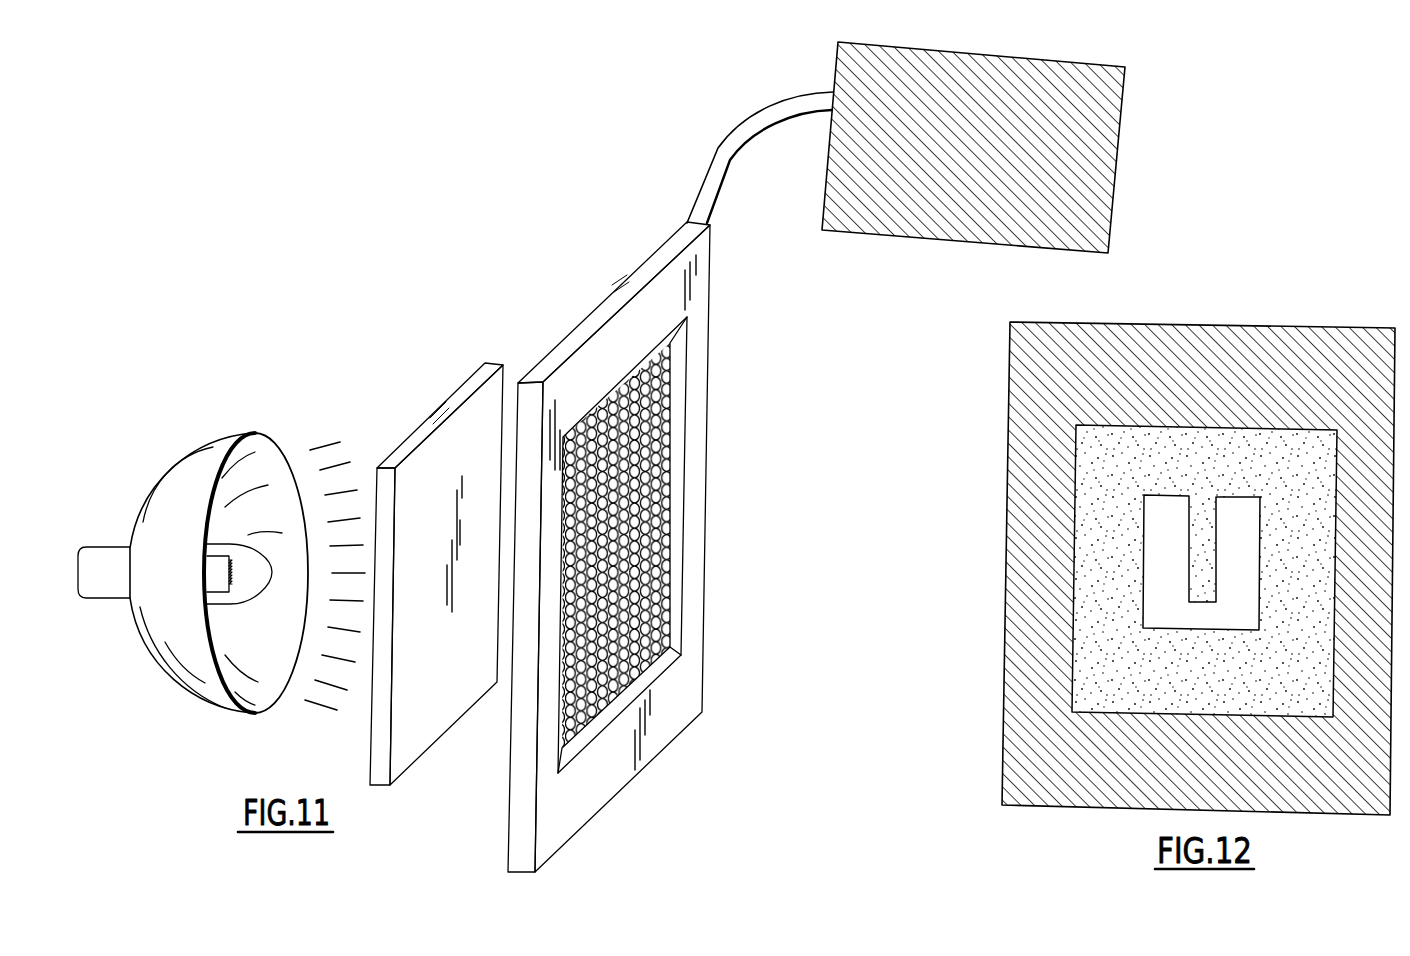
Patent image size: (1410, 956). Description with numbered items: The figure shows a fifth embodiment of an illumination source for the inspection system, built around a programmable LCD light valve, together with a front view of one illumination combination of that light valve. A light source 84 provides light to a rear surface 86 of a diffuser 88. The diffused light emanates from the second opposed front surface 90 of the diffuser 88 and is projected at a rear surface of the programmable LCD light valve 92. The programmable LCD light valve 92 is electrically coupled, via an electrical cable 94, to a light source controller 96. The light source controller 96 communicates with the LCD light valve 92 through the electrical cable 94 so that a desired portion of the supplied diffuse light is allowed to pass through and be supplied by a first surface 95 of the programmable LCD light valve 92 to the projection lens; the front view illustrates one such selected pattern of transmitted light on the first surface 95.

In FIG. 11, the light source 84 is at (207, 432).
In FIG. 11, the rear surface 86 is at (374, 470).
In FIG. 11, the diffuser 88 is at (436, 563).
In FIG. 11, the front surface 90 is at (420, 720).
In FIG. 11, the programmable LCD light valve 92 is at (678, 737).
In FIG. 11, the electrical cable 94 is at (720, 132).
In FIG. 11, the first surface 95 is at (668, 541).
In FIG. 12, the first surface 95 is at (1083, 552).
In FIG. 11, the light source controller 96 is at (936, 242).